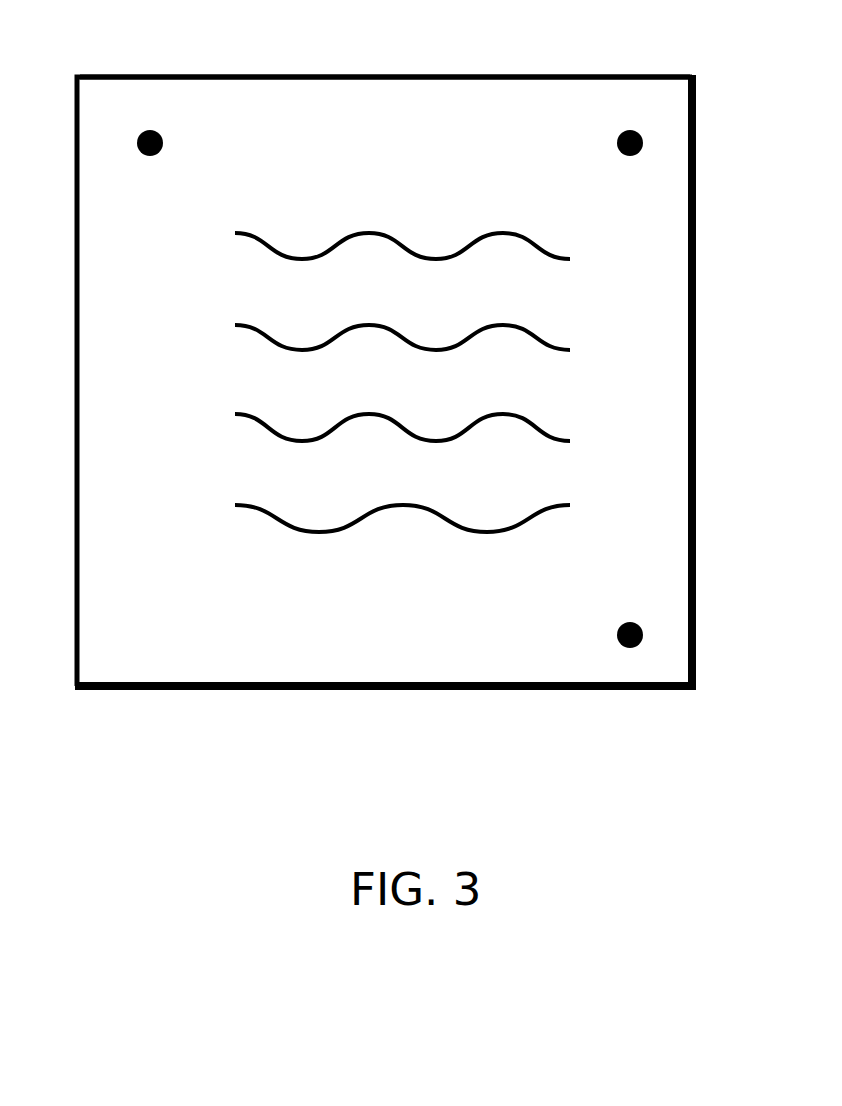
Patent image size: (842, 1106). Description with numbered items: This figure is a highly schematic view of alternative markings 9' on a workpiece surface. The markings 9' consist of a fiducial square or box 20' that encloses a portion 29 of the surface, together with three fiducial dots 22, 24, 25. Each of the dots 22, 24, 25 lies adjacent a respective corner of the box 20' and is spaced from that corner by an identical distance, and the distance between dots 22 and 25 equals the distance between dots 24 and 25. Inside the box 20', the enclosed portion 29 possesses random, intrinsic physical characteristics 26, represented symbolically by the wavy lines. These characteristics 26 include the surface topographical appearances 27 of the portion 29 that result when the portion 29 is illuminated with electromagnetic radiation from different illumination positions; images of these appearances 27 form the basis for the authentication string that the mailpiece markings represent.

The markings 9' is at (385, 48).
The fiducial square or box 20' is at (357, 380).
The fiducial dot 22 is at (168, 136).
The fiducial dot 24 is at (608, 635).
The fiducial dot 25 is at (608, 143).
The random intrinsic physical characteristics 26 is at (377, 230).
The surface topographical appearances 27 is at (258, 232).
The portion of the surface 29 is at (611, 296).